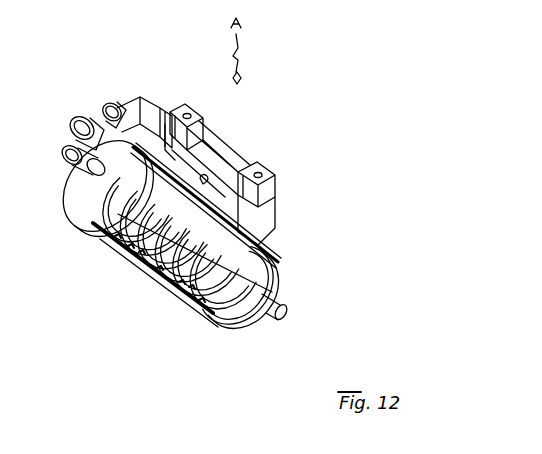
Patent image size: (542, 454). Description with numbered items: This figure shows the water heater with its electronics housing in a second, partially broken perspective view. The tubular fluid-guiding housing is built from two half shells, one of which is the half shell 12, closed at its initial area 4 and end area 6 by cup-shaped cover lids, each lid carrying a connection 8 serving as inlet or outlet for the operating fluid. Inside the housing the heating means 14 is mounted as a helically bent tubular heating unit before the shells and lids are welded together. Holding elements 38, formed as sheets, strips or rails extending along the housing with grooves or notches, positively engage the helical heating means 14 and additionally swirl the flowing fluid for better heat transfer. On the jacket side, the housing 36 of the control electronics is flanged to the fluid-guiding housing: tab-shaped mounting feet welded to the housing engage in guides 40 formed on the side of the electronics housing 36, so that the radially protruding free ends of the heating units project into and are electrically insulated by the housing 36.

The initial area 4 is at (77, 202).
The end area 6 is at (273, 273).
The connection 8 is at (60, 157).
The half shell 12 is at (98, 233).
The heating means 14 is at (190, 292).
The housing of control electronics 36 is at (140, 95).
The holding element 38 is at (130, 250).
The guide 40 is at (190, 148).